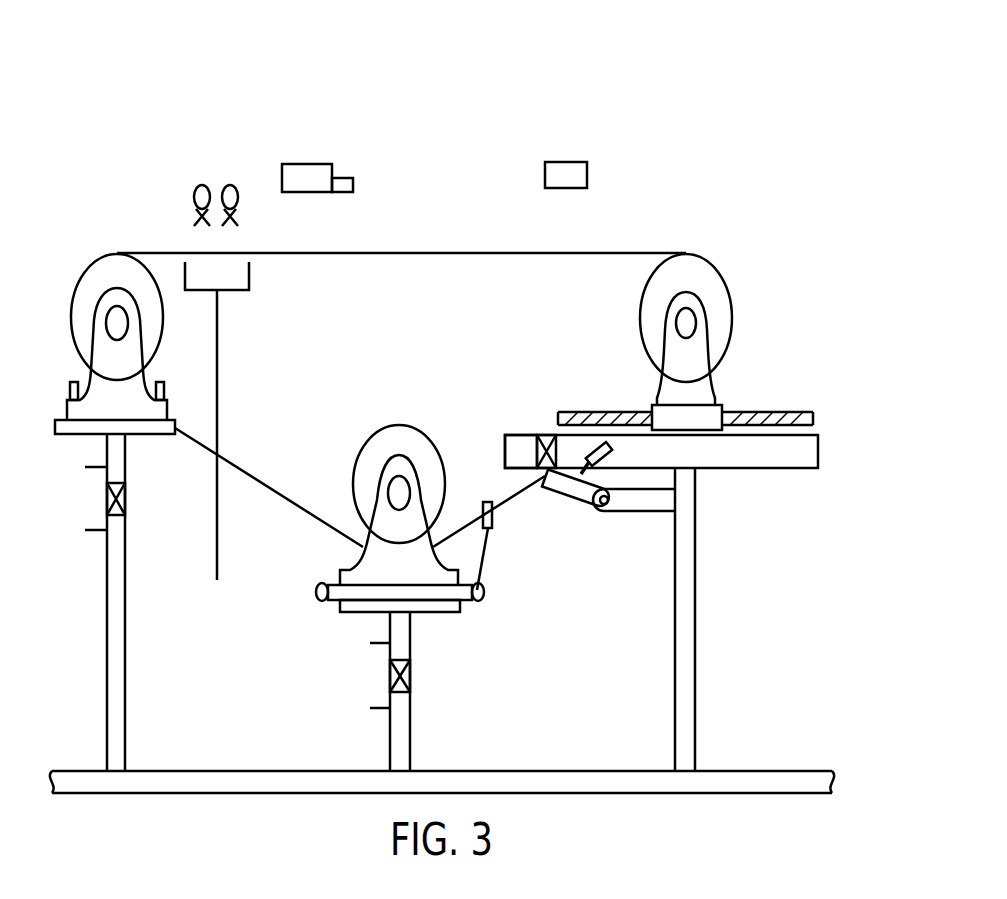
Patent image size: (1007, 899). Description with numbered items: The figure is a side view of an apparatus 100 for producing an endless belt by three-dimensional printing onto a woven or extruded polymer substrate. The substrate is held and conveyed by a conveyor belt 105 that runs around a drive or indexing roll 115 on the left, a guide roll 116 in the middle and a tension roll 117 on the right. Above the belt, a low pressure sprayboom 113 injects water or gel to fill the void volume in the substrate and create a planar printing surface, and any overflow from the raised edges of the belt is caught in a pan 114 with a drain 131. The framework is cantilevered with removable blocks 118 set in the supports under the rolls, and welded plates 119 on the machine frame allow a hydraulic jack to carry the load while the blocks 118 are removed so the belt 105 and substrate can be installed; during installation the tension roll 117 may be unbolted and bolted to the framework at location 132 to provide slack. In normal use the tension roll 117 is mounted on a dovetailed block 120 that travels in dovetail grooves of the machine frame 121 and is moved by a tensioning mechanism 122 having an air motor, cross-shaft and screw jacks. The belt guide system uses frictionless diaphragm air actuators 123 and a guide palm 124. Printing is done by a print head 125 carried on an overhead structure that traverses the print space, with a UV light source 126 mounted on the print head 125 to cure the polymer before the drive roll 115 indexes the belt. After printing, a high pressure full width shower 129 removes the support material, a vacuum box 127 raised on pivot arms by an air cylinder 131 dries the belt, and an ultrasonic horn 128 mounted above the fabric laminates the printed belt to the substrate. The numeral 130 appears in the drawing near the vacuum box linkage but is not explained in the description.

The apparatus 100 is at (737, 140).
The conveyor belt 105 is at (433, 253).
The low pressure sprayboom 113 is at (193, 190).
The pan 114 is at (249, 276).
The drive or indexing roll 115 is at (97, 278).
The guide roll 116 is at (401, 441).
The tension roll 117 is at (712, 278).
The removable blocks 118 is at (125, 500).
The welded plates 119 is at (85, 530).
The block 120 is at (660, 420).
The machine frame 121 is at (818, 468).
The tensioning mechanism 122 is at (785, 412).
The frictionless diaphragm air actuators 123 is at (484, 592).
The guide palm 124 is at (495, 528).
The print head 125 is at (303, 164).
The UV light source 126 is at (353, 180).
The vacuum box 127 is at (545, 487).
The ultrasonic horn 128 is at (587, 176).
The high pressure full width shower 129 is at (229, 185).
The actuator arm 130 is at (603, 512).
The drain 131 is at (218, 339).
The location 132 is at (505, 445).